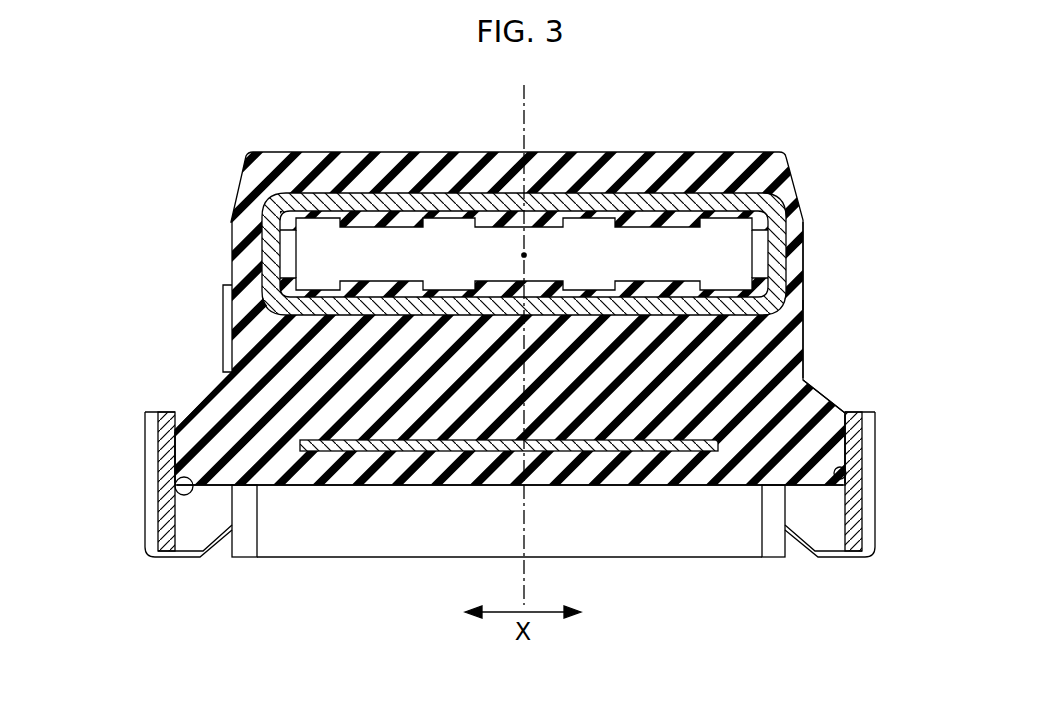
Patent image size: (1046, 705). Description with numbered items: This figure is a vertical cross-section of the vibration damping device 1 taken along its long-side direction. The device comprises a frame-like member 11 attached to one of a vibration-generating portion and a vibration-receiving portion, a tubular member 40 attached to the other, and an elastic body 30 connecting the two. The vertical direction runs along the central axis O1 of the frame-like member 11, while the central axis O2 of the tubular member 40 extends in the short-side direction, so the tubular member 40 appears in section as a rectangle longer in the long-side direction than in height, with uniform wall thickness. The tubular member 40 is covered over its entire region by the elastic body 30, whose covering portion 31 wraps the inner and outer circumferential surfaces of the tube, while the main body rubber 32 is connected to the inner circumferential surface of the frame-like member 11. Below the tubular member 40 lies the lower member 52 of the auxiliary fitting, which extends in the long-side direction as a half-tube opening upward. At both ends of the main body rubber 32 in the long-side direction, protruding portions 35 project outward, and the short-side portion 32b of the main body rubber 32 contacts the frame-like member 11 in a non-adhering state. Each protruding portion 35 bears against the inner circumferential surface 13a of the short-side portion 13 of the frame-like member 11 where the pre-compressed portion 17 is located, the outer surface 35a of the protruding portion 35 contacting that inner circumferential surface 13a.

The vibration damping device 1 is at (820, 109).
The frame-like member 11 is at (141, 405).
The short-side portion 13 is at (147, 548).
The inner circumferential surface 13a is at (176, 490).
The pre-compressed portion 17 is at (164, 412).
The elastic body 30 is at (243, 146).
The covering portion 31 is at (796, 232).
The main body rubber 32 is at (790, 352).
The short-side portion of the main body rubber 32b is at (237, 318).
The protruding portion 35 is at (211, 394).
The outer surface 35a is at (172, 430).
The tubular member 40 is at (756, 203).
The lower member 52 is at (380, 452).
The central axis O1 is at (528, 92).
The central axis O2 is at (530, 256).